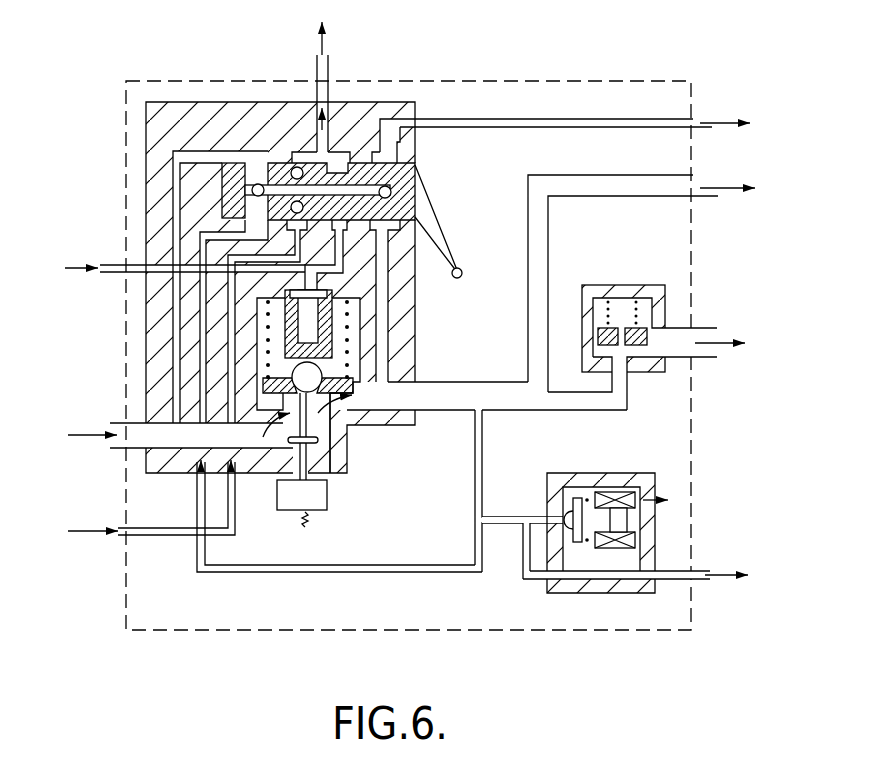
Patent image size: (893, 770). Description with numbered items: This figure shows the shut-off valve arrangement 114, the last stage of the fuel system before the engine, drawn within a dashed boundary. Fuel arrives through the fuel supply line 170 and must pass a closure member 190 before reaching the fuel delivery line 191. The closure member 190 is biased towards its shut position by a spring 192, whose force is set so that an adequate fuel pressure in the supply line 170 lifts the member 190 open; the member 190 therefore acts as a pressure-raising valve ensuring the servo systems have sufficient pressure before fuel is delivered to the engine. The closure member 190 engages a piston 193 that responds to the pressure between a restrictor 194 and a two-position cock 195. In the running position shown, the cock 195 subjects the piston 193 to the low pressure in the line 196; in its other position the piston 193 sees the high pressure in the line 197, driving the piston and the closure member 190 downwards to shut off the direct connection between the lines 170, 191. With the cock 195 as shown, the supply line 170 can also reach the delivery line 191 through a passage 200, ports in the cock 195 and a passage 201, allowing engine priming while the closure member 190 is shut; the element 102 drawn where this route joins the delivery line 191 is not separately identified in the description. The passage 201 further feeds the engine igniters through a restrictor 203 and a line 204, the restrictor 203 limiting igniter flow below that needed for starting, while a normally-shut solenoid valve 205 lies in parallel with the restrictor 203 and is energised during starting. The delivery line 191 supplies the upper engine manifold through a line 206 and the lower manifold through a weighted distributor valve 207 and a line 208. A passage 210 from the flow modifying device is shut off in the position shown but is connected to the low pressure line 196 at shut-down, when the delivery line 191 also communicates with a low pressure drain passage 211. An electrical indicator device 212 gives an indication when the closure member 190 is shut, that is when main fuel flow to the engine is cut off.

The shut-off valve arrangement 114 is at (240, 612).
The passage 200 is at (174, 187).
The two-position cock 195 is at (366, 160).
The low pressure line 196 is at (318, 78).
The low pressure drain passage 211 is at (707, 118).
The restrictor 194 is at (300, 272).
The high pressure line 197 is at (120, 268).
The closure member 190 is at (323, 393).
The spring 192 is at (350, 338).
The piston 193 is at (322, 325).
The electrical indicator device 212 is at (312, 497).
The fuel supply line 170 is at (87, 436).
The passage 210 is at (93, 535).
The passage 201 is at (365, 575).
The conduit 102 is at (478, 458).
The fuel delivery line 191 is at (507, 395).
The line 206 is at (712, 186).
The weighted distributor valve 207 is at (672, 313).
The line 208 is at (693, 352).
The solenoid valve 205 is at (585, 498).
The restrictor 203 is at (523, 545).
The line 204 is at (685, 573).